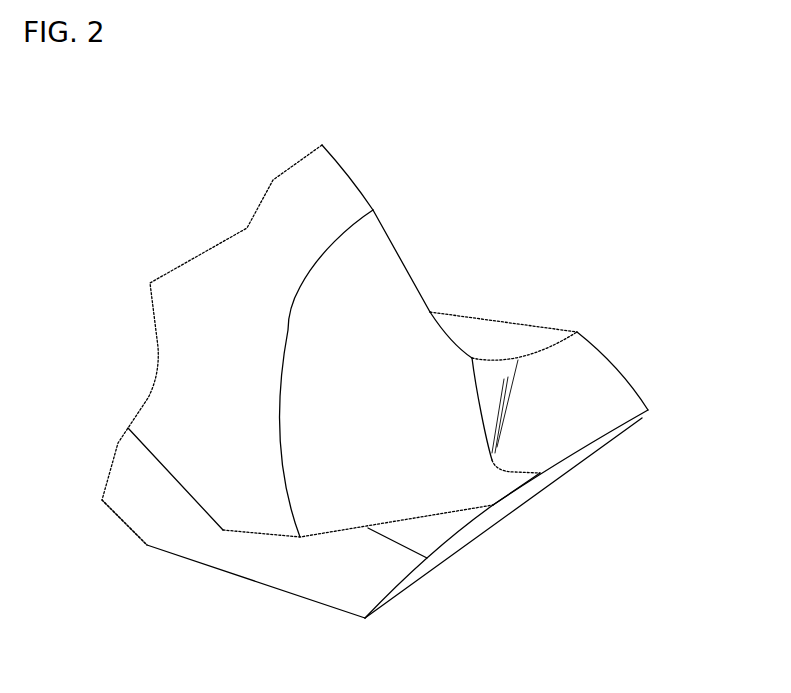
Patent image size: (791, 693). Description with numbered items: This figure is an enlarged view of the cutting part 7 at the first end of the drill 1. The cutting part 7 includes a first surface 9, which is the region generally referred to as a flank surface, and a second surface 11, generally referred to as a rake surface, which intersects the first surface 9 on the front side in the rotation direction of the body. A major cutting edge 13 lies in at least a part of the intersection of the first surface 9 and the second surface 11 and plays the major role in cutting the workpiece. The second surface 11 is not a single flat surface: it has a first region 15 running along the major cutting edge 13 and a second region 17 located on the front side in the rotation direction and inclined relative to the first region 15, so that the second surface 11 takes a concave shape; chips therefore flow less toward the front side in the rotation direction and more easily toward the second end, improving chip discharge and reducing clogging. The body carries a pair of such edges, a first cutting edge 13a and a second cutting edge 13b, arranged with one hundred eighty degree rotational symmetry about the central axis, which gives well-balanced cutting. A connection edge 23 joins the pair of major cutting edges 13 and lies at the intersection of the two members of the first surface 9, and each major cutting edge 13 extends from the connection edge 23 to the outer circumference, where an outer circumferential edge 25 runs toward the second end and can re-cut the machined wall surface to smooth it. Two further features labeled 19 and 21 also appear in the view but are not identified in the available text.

The drill 1 is at (365, 335).
The cutting part 7 is at (545, 227).
The first surface 9 is at (378, 262).
The second surface 11 is at (612, 381).
The major cutting edge 13 is at (521, 518).
The first cutting edge 13a is at (577, 452).
The second cutting edge 13b is at (435, 520).
The first region 15 is at (593, 375).
The second region 17 is at (490, 396).
The edge portion 19 is at (494, 330).
The corner portion 21 is at (332, 203).
The connection edge 23 is at (500, 497).
The outer circumferential edge 25 is at (177, 485).